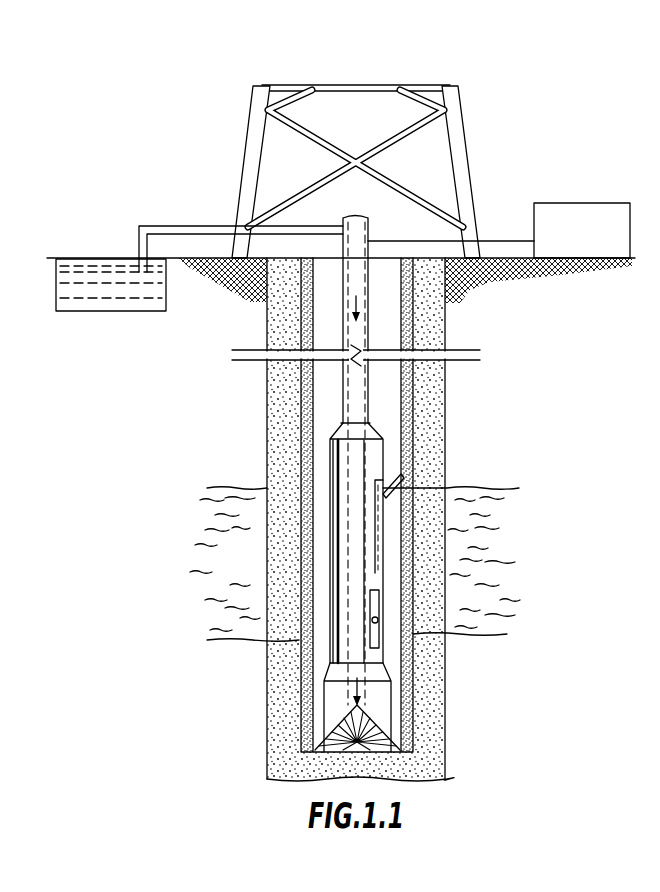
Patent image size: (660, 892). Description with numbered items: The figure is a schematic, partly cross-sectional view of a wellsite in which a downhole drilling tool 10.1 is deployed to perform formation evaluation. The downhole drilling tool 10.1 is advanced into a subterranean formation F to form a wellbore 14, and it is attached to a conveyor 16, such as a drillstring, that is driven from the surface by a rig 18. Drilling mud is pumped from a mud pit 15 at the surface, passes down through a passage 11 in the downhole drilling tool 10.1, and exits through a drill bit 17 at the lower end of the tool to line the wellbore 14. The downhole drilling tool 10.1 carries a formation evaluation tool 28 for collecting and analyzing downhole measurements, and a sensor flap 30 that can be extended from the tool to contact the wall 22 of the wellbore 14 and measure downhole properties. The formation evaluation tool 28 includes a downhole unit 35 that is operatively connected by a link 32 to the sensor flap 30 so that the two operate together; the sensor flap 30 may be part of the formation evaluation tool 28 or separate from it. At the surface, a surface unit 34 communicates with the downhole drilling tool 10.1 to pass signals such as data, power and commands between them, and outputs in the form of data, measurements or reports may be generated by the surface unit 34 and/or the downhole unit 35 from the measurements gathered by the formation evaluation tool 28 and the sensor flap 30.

The downhole drilling tool 10.1 is at (392, 458).
The passage 11 is at (368, 311).
The wellbore 14 is at (400, 273).
The mud pit 15 is at (103, 272).
The conveyor 16 is at (343, 310).
The drill bit 17 is at (393, 752).
The rig 18 is at (467, 197).
The wall 22 is at (405, 640).
The formation evaluation tool 28 is at (393, 646).
The sensor flap 30 is at (402, 492).
The link 32 is at (375, 573).
The surface unit 34 is at (601, 246).
The downhole unit 35 is at (383, 620).
The subterranean formation F is at (205, 588).